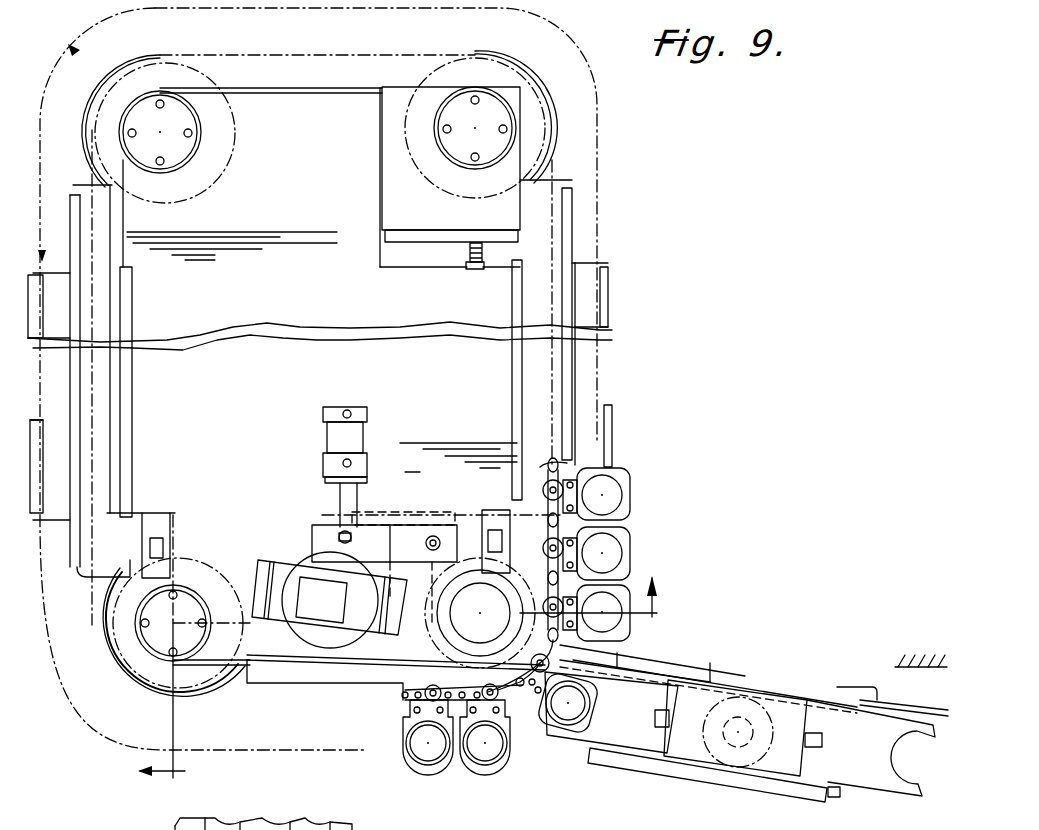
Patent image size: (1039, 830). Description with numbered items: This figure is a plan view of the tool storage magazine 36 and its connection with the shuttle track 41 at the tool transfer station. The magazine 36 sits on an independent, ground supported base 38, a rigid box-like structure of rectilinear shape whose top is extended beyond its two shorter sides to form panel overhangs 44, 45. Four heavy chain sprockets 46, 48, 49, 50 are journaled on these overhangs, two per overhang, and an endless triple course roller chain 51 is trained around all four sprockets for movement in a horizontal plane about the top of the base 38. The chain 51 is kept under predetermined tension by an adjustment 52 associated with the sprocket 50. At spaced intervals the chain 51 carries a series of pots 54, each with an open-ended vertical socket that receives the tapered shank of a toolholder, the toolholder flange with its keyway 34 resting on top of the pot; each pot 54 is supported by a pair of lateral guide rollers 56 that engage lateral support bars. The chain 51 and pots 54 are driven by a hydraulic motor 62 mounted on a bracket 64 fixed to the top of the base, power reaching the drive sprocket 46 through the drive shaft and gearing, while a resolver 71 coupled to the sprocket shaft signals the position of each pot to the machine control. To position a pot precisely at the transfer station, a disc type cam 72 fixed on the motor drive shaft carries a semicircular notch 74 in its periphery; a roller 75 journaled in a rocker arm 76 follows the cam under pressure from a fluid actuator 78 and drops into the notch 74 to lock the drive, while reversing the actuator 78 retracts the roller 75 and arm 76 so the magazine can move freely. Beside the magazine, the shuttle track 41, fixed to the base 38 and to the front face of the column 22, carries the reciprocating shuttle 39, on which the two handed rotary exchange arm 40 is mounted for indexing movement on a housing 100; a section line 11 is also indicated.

The section line 11 is at (409, 680).
The column 22 is at (893, 665).
The keyway 34 is at (630, 538).
The tool storage magazine 36 is at (640, 486).
The base 38 is at (612, 300).
The shuttle 39 is at (773, 800).
The exchange arm 40 is at (848, 784).
The shuttle track 41 is at (922, 698).
The panel overhang 44 is at (250, 657).
The panel overhang 45 is at (297, 104).
The drive sprocket 46 is at (535, 722).
The chain sprocket 48 is at (123, 668).
The chain sprocket 49 is at (160, 67).
The chain sprocket 50 is at (478, 67).
The roller chain 51 is at (403, 694).
The adjustment 52 is at (469, 265).
The pot 54 is at (433, 770).
The lateral guide roller 56 is at (547, 497).
The hydraulic motor 62 is at (317, 617).
The bracket 64 is at (258, 558).
The resolver 71 is at (480, 597).
The cam 72 is at (300, 553).
The notch 74 is at (341, 522).
The roller 75 is at (322, 508).
The rocker arm 76 is at (418, 527).
The fluid actuator 78 is at (367, 428).
The housing 100 is at (671, 772).